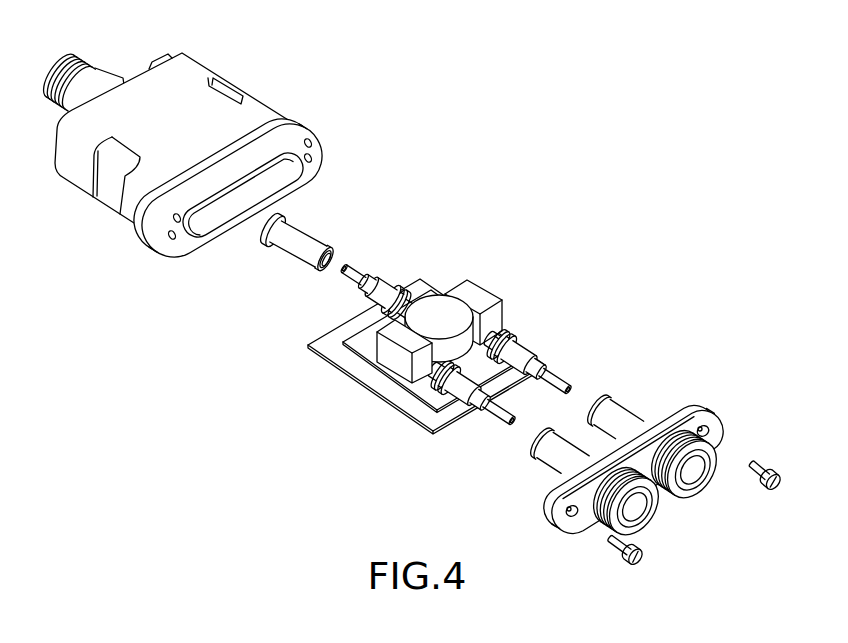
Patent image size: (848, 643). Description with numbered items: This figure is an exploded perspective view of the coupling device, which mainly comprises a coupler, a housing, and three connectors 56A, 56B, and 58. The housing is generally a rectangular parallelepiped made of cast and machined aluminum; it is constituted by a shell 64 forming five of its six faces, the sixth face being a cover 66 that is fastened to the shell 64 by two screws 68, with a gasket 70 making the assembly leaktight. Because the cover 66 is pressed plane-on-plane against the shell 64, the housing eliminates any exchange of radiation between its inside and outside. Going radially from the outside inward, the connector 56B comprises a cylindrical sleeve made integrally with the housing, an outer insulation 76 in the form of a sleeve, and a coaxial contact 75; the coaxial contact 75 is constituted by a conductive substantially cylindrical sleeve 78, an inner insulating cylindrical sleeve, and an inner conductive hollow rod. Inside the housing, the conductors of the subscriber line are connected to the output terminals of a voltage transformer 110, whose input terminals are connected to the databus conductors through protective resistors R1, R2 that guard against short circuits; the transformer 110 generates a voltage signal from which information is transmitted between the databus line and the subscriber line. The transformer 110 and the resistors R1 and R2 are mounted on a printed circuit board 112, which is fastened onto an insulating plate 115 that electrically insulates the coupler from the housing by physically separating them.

The connector 56B is at (90, 53).
The shell 64 is at (179, 136).
The outer insulation 76 is at (302, 258).
The coaxial contact 75 is at (378, 264).
The voltage transformer 110 is at (437, 304).
The protective resistor R2 is at (484, 298).
The protective resistor R1 is at (393, 360).
The printed circuit board 112 is at (427, 391).
The insulating plate 115 is at (428, 420).
The conductive cylindrical sleeve 78 is at (543, 352).
The gasket 70 is at (641, 469).
The connector 58 is at (699, 495).
The connector 56A is at (649, 519).
The cover 66 is at (586, 528).
The screws 68 is at (770, 490).